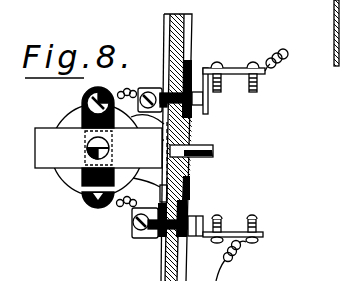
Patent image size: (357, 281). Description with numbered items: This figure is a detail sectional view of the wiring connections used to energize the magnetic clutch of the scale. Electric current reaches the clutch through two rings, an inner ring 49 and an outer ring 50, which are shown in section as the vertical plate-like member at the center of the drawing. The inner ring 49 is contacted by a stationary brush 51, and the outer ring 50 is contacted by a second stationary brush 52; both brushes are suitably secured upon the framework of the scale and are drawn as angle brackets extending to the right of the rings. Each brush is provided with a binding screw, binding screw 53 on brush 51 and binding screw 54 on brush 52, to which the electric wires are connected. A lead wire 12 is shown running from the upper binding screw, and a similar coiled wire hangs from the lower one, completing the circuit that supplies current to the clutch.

The lead wire 12 is at (288, 52).
The inner ring 49 is at (192, 195).
The outer ring 50 is at (186, 236).
The stationary brush 51 is at (202, 104).
The stationary brush 52 is at (228, 233).
The binding screw 53 is at (249, 68).
The binding screw 54 is at (250, 236).